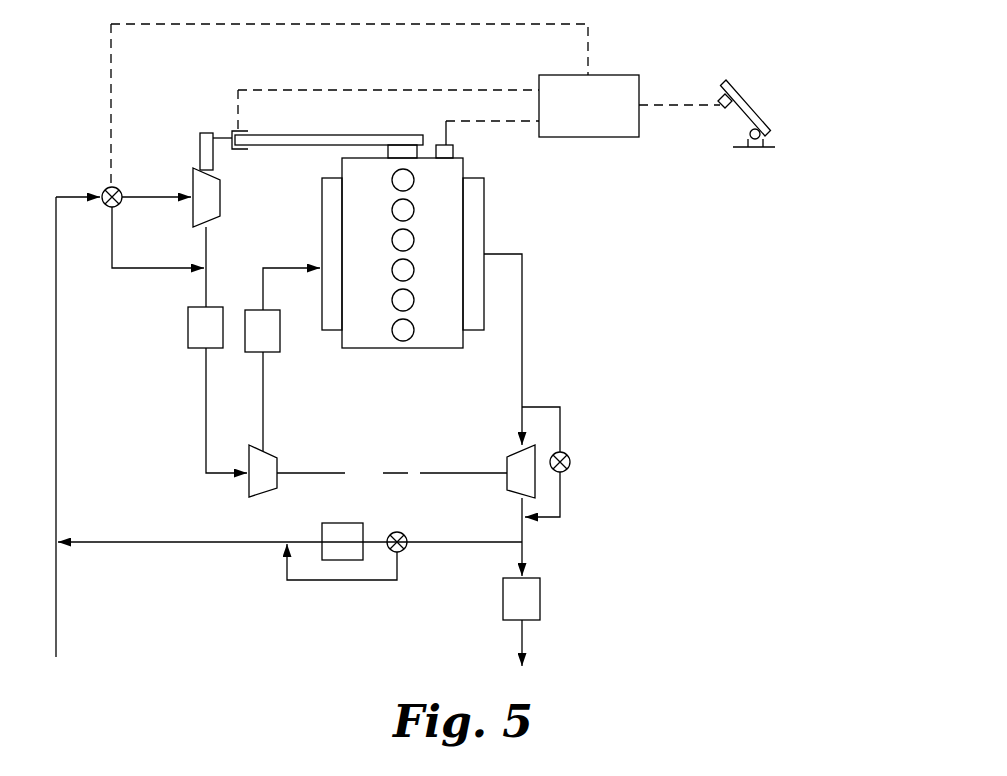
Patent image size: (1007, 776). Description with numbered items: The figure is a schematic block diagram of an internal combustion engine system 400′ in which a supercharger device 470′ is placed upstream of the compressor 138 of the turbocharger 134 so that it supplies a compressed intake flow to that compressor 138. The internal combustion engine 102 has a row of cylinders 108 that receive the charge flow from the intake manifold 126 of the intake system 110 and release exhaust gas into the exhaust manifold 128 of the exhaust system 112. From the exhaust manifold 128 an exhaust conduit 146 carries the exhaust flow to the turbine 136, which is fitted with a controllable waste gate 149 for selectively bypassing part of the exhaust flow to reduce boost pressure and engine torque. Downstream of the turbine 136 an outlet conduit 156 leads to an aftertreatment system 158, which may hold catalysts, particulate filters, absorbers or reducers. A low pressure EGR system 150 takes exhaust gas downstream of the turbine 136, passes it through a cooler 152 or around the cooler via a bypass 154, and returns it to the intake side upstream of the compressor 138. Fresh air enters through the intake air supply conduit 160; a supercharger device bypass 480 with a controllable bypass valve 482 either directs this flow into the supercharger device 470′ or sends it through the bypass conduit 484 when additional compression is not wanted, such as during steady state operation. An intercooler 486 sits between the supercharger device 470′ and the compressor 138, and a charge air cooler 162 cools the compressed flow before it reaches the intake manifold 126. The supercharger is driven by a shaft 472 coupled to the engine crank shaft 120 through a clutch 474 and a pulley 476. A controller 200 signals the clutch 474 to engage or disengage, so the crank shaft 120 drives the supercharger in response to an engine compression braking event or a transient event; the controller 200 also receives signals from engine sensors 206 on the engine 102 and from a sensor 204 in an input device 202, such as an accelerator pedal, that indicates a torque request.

The internal combustion engine 102 is at (468, 172).
The cylinders 108 is at (414, 324).
The intake system 110 is at (266, 387).
The exhaust system 112 is at (526, 322).
The crank shaft 120 is at (405, 153).
The intake manifold 126 is at (322, 228).
The exhaust manifold 128 is at (487, 225).
The turbocharger 134 is at (350, 469).
The turbine 136 is at (507, 464).
The compressor 138 is at (277, 460).
The exhaust conduit 146 is at (522, 278).
The waste gate 149 is at (571, 462).
The low pressure EGR system 150 is at (209, 547).
The cooler 152 is at (350, 523).
The bypass 154 is at (315, 581).
The outlet conduit 156 is at (522, 548).
The aftertreatment system 158 is at (540, 595).
The intake air supply conduit 160 is at (56, 413).
The charge air cooler 162 is at (280, 335).
The controller 200 is at (589, 106).
The input device 202 is at (757, 95).
The sensor 204 is at (727, 110).
The engine sensors 206 is at (455, 148).
The internal combustion engine system 400′ is at (669, 357).
The supercharger device 470′ is at (189, 167).
The shaft 472 is at (200, 132).
The clutch 474 is at (233, 130).
The pulley 476 is at (268, 134).
The supercharger device bypass 480 is at (152, 272).
The bypass valve 482 is at (103, 189).
The bypass conduit 484 is at (112, 244).
The intercooler 486 is at (188, 335).